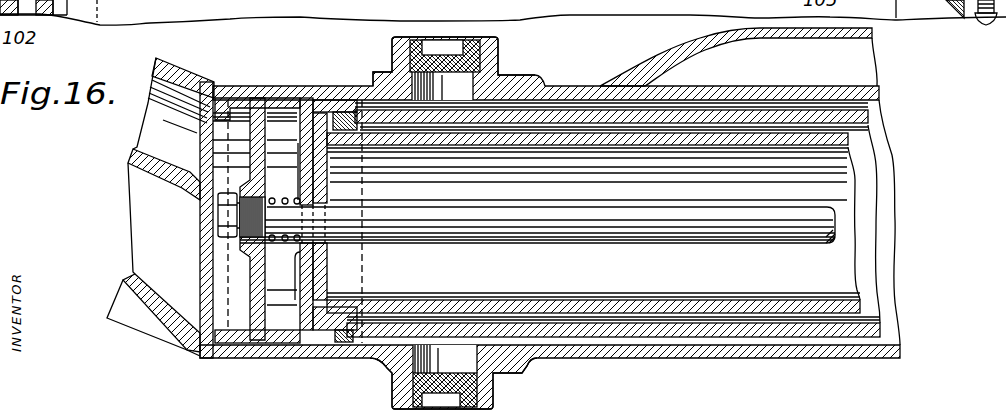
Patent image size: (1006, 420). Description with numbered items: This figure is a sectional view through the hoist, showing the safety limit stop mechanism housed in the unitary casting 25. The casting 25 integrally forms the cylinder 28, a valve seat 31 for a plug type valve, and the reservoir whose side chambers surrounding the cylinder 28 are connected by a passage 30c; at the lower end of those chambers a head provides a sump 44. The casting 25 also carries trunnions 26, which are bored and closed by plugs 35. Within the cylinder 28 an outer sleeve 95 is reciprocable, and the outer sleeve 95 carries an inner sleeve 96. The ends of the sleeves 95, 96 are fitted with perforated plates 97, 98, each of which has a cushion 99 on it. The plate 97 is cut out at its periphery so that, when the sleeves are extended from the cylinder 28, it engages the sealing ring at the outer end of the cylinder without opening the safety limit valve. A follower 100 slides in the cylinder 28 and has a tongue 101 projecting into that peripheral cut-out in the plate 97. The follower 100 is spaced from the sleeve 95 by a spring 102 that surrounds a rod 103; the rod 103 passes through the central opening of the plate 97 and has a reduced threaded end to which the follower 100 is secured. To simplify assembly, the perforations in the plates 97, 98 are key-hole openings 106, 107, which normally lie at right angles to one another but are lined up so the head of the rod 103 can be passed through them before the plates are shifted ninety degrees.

The unitary casting 25 is at (687, 45).
The trunnions 26 is at (499, 43).
The cylinder 28 is at (767, 97).
The passage 30c is at (920, 58).
The valve seat 31 is at (152, 136).
The plugs 35 is at (464, 61).
The sump 44 is at (152, 343).
The outer sleeve 95 is at (645, 331).
The inner sleeve 96 is at (582, 305).
The perforated plate 97 is at (311, 100).
The perforated plate 98 is at (331, 110).
The cushion 99 is at (353, 117).
The follower 100 is at (262, 98).
The tongue 101 is at (330, 277).
The spring 102 is at (268, 253).
The rod 103 is at (623, 242).
The key-hole opening 106 is at (311, 184).
The key-hole opening 107 is at (328, 252).